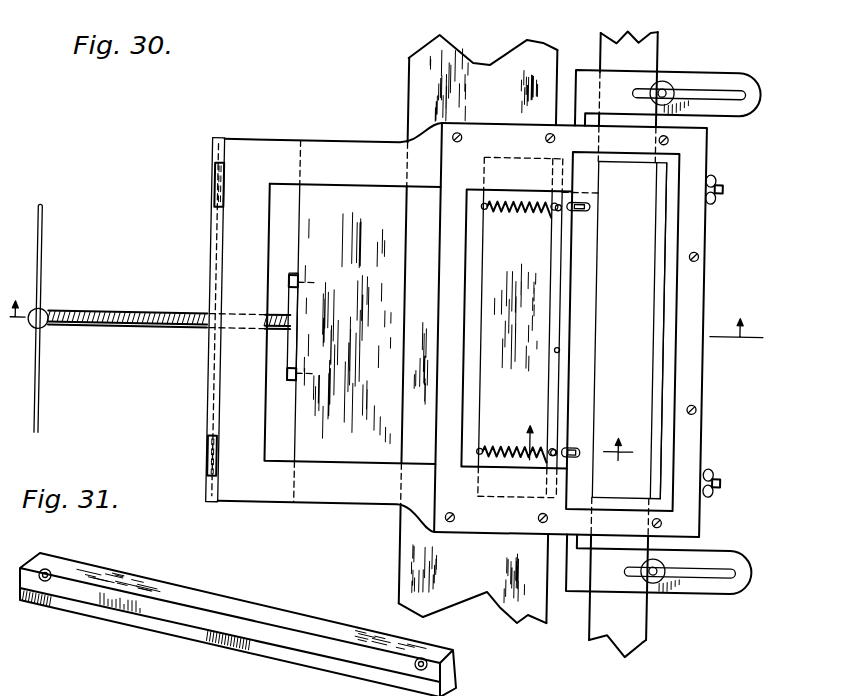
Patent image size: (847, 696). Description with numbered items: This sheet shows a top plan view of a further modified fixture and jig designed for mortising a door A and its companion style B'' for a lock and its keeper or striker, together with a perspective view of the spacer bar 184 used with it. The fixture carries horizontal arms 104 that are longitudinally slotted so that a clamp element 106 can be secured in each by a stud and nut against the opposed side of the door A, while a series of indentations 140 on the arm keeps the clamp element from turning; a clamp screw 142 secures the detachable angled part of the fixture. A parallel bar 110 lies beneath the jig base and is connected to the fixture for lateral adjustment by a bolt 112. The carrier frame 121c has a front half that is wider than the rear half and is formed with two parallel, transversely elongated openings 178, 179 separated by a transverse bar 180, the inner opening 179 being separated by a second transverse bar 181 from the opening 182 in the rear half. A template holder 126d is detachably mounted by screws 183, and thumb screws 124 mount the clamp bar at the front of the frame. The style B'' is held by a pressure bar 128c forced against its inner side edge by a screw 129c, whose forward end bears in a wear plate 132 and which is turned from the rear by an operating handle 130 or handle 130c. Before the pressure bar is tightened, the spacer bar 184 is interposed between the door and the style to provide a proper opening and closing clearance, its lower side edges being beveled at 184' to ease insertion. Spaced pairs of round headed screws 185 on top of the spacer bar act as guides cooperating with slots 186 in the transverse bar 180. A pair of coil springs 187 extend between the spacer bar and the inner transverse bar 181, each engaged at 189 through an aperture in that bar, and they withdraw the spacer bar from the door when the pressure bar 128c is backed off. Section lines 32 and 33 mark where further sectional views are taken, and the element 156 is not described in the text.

In FIG. 30, the door A is at (615, 47).
In FIG. 30, the style B'' is at (478, 316).
In FIG. 30, the section line 32 is at (384, 335).
In FIG. 30, the section line 33 is at (573, 447).
In FIG. 30, the horizontal arm 104 is at (748, 89).
In FIG. 30, the clamp element 106 is at (731, 89).
In FIG. 30, the parallel bar 110 is at (658, 86).
In FIG. 30, the bolt 112 is at (661, 88).
In FIG. 30, the carrier frame 121c is at (270, 503).
In FIG. 30, the thumb screw 124 is at (210, 214).
In FIG. 30, the template holder 126d is at (694, 285).
In FIG. 30, the pressure bar 128c is at (350, 151).
In FIG. 30, the screw 129c is at (90, 333).
In FIG. 30, the operating handle 130 is at (209, 176).
In FIG. 30, the handle 130c is at (40, 208).
In FIG. 30, the wear plate 132 is at (214, 142).
In FIG. 30, the indentations 140 is at (720, 182).
In FIG. 30, the clamp screw 142 is at (716, 195).
In FIG. 30, the bracket 156 is at (289, 302).
In FIG. 30, the opening 178 is at (661, 328).
In FIG. 30, the inner opening 179 is at (557, 346).
In FIG. 30, the transverse bar 180 is at (587, 314).
In FIG. 30, the second transverse bar 181 is at (474, 384).
In FIG. 30, the opening 182 is at (362, 462).
In FIG. 30, the screws 183 is at (546, 133).
In FIG. 31, the spacer bar 184 is at (238, 624).
In FIG. 31, the beveled lower side edges 184' is at (229, 661).
In FIG. 30, the round headed screws 185 is at (572, 449).
In FIG. 30, the slots 186 is at (586, 202).
In FIG. 30, the coil springs 187 is at (502, 199).
In FIG. 30, the spring end engagement 189 is at (555, 211).